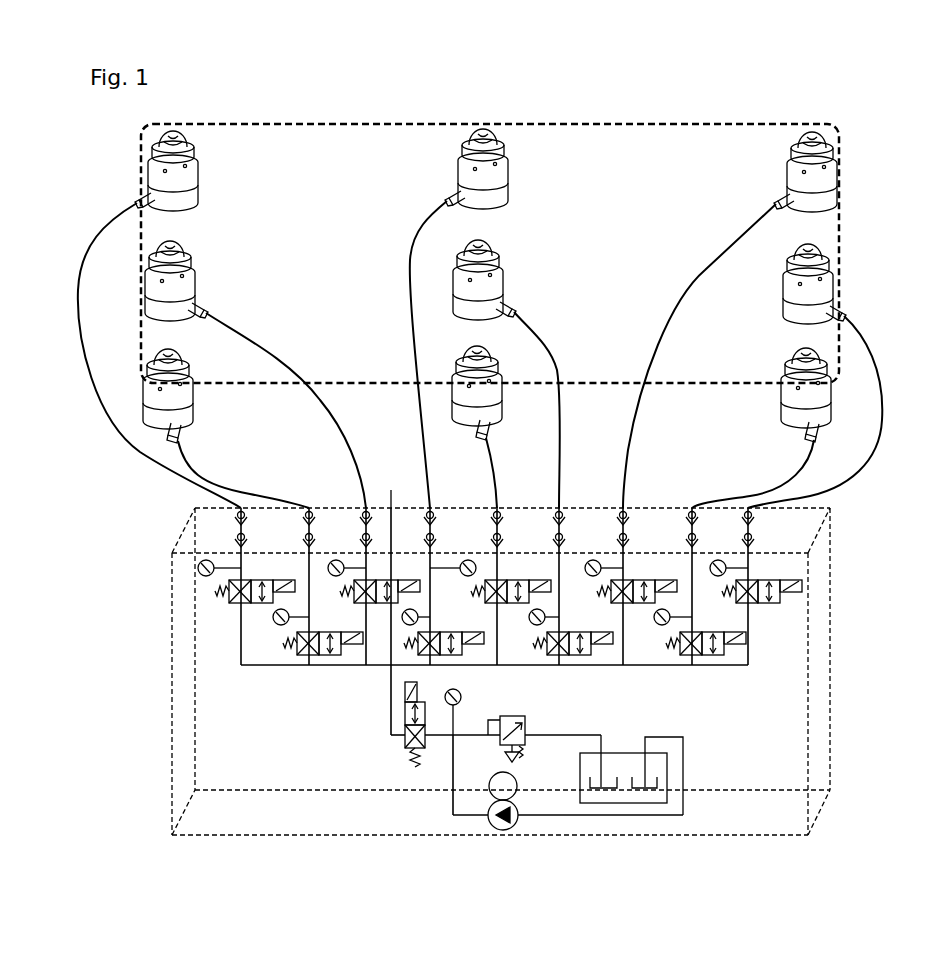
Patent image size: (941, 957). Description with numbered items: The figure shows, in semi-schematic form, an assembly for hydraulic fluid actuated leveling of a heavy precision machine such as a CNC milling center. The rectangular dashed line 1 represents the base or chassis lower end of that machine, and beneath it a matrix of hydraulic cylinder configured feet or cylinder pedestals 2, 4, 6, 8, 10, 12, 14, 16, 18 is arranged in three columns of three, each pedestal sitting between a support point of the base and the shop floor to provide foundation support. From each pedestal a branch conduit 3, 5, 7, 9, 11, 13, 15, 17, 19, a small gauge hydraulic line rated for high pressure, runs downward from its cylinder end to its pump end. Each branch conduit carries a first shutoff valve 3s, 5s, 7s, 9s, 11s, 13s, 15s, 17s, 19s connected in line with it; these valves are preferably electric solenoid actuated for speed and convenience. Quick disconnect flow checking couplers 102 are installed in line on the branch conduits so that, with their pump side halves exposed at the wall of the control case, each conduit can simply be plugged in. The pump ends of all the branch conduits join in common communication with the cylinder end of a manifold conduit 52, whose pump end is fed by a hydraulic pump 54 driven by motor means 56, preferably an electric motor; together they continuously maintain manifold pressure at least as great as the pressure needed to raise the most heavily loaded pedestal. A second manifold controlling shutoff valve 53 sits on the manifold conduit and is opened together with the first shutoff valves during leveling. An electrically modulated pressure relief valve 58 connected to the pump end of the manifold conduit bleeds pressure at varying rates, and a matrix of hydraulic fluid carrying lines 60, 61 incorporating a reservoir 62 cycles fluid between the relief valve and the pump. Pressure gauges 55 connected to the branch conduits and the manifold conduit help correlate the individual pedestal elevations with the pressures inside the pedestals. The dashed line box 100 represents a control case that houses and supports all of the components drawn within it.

The machine base 1 is at (366, 124).
The cylinder pedestal 2 is at (195, 187).
The cylinder pedestal 4 is at (183, 283).
The cylinder pedestal 6 is at (190, 401).
The cylinder pedestal 8 is at (505, 192).
The cylinder pedestal 10 is at (492, 280).
The cylinder pedestal 12 is at (490, 408).
The cylinder pedestal 14 is at (825, 192).
The cylinder pedestal 16 is at (818, 283).
The cylinder pedestal 18 is at (790, 396).
The branch conduit 3 is at (80, 280).
The branch conduit 5 is at (272, 356).
The branch conduit 7 is at (248, 494).
The branch conduit 9 is at (410, 238).
The branch conduit 11 is at (560, 358).
The branch conduit 13 is at (497, 488).
The branch conduit 15 is at (738, 242).
The branch conduit 17 is at (877, 365).
The branch conduit 19 is at (761, 493).
The first shutoff valve 3s is at (232, 603).
The first shutoff valve 5s is at (372, 604).
The first shutoff valve 7s is at (317, 631).
The first shutoff valve 9s is at (447, 631).
The first shutoff valve 11s is at (580, 631).
The first shutoff valve 13s is at (512, 604).
The first shutoff valve 15s is at (636, 604).
The first shutoff valve 17s is at (766, 604).
The first shutoff valve 19s is at (702, 631).
The manifold conduit 52 is at (270, 668).
The second manifold controlling shutoff valve 53 is at (400, 752).
The hydraulic pump 54 is at (518, 814).
The pressure gauge 55 is at (336, 560).
The motor means 56 is at (517, 788).
The pressure relief valve 58 is at (522, 716).
The hydraulic fluid carrying line 60 is at (578, 735).
The hydraulic fluid carrying line 61 is at (683, 773).
The reservoir 62 is at (618, 752).
The control case 100 is at (172, 605).
The quick disconnect flow checking coupler 102 is at (391, 508).